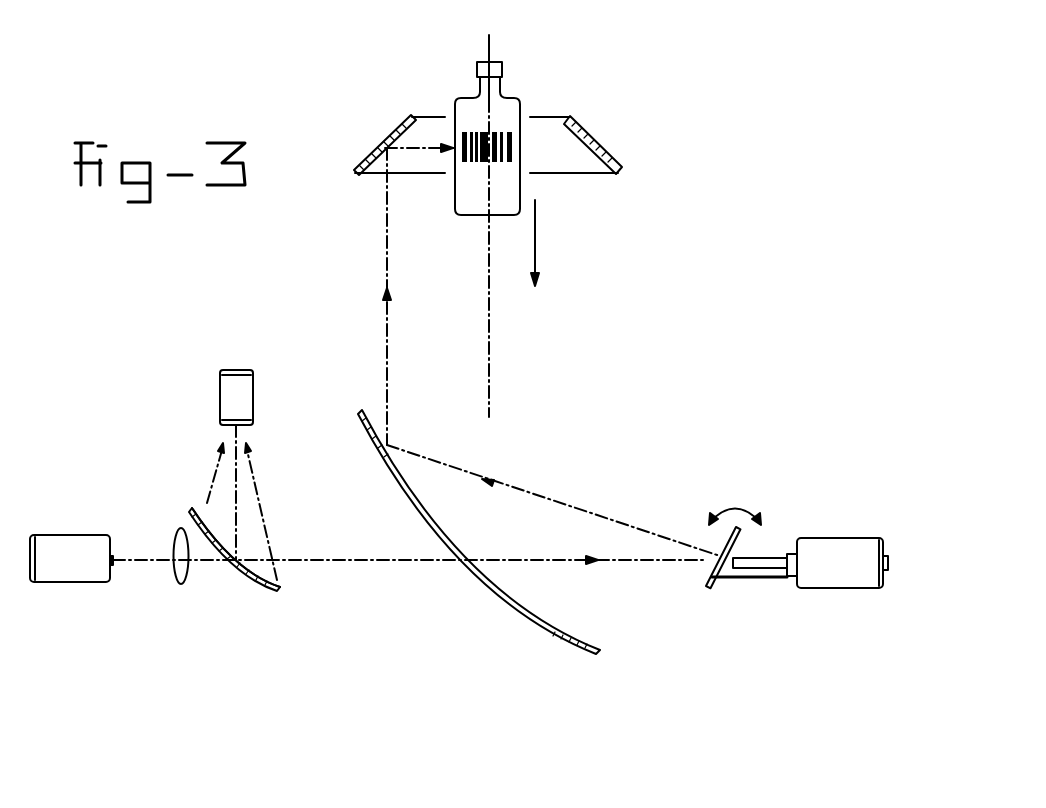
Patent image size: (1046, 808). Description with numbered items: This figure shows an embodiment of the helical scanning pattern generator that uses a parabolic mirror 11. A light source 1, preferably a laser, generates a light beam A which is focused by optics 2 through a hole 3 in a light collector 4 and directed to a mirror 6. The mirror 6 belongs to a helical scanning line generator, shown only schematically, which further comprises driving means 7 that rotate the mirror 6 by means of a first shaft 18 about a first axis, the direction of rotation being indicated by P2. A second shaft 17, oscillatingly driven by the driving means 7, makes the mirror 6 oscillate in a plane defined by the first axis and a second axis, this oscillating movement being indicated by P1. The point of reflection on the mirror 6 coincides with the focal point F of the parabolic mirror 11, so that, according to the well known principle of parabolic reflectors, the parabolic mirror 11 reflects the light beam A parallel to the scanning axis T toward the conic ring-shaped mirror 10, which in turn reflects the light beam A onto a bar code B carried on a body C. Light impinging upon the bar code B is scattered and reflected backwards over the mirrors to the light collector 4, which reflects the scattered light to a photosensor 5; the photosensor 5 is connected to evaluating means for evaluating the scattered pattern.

The light source 1 is at (57, 570).
The optics 2 is at (182, 572).
The hole 3 is at (225, 566).
The light collector 4 is at (262, 580).
The photosensor 5 is at (232, 400).
The mirror 6 is at (706, 586).
The driving means 7 is at (830, 548).
The conic ring-shaped mirror 10 is at (373, 151).
The parabolic mirror 11 is at (556, 631).
The second shaft 17 is at (777, 579).
The first shaft 18 is at (777, 556).
The light beam A is at (600, 566).
The bar code B is at (483, 130).
The body C is at (508, 112).
The focal point F is at (718, 557).
The scanning axis T is at (490, 339).
The oscillating movement P1 is at (732, 505).
The direction of rotation P2 is at (755, 548).